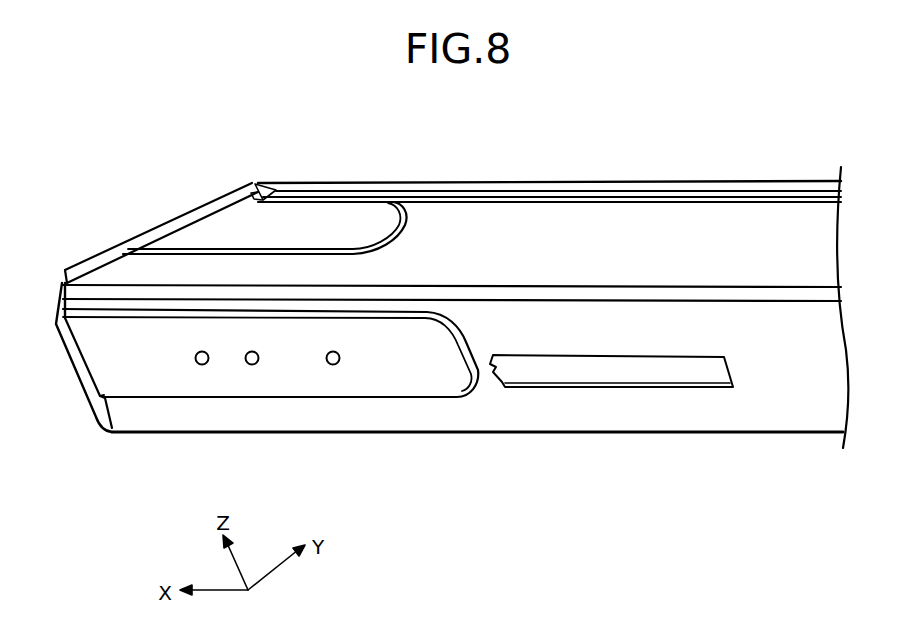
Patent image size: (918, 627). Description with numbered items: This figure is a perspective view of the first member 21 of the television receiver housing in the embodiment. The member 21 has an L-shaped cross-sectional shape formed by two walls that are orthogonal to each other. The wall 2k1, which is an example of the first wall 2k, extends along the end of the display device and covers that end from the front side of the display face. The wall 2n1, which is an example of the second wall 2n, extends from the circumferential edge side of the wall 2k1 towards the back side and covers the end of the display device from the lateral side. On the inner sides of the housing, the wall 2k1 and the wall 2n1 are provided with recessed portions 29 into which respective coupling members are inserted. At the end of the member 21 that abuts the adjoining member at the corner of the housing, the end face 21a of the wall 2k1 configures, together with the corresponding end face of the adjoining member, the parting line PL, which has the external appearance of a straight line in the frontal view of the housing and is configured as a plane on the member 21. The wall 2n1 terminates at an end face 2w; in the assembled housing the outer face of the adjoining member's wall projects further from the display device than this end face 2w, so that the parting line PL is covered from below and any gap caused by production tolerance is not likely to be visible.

The member 21 is at (608, 148).
The wall 2k1 is at (546, 173).
The wall 2k is at (488, 215).
The parting line PL is at (144, 233).
The end face 21a is at (95, 263).
The recessed portion 29 is at (220, 220).
The end face 2w is at (83, 375).
The wall 2n1 is at (611, 428).
The wall 2n is at (611, 371).